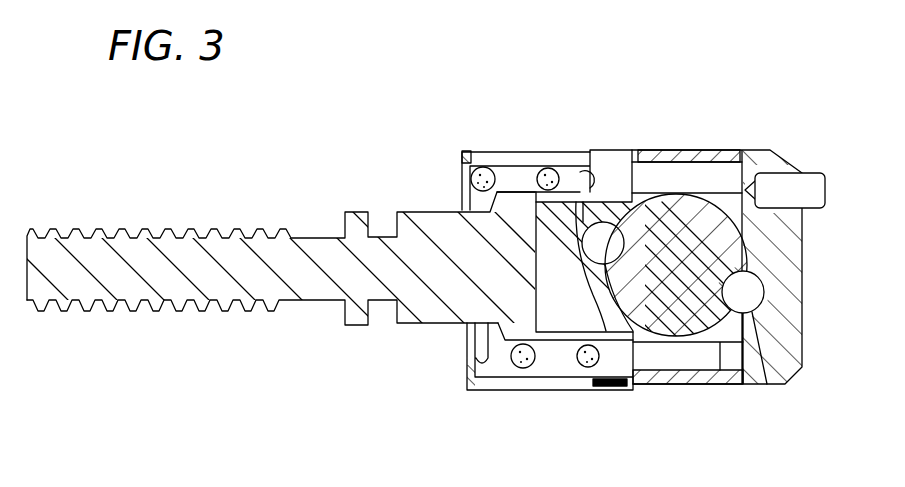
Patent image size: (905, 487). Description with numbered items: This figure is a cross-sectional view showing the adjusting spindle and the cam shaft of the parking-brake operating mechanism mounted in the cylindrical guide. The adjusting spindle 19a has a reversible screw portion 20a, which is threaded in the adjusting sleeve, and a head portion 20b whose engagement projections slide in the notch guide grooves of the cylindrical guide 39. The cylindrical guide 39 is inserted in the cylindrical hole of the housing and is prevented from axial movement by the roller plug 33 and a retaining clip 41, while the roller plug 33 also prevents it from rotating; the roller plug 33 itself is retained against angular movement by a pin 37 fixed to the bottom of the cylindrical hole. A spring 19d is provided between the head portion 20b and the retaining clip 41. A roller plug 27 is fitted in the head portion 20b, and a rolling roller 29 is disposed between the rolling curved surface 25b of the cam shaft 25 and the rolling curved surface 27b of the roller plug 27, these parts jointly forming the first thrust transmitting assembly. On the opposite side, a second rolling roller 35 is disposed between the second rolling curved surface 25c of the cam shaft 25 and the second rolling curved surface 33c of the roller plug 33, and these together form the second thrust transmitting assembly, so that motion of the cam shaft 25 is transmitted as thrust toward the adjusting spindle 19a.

The adjusting spindle 19a is at (190, 326).
The reversible screw portion 20a is at (173, 230).
The head portion 20b is at (515, 277).
The spring 19d is at (520, 368).
The cylindrical guide 39 is at (522, 138).
The retaining clip 41 is at (464, 150).
The roller plug 27 is at (559, 312).
The rolling curved surface 27b is at (600, 350).
The rolling roller 29 is at (606, 236).
The cam shaft 25 is at (683, 230).
The rolling curved surface 25b is at (626, 222).
The second rolling curved surface 25c is at (703, 384).
The roller plug 33 is at (791, 323).
The second rolling curved surface 33c is at (765, 250).
The pin 37 is at (813, 183).
The second rolling roller 35 is at (748, 300).